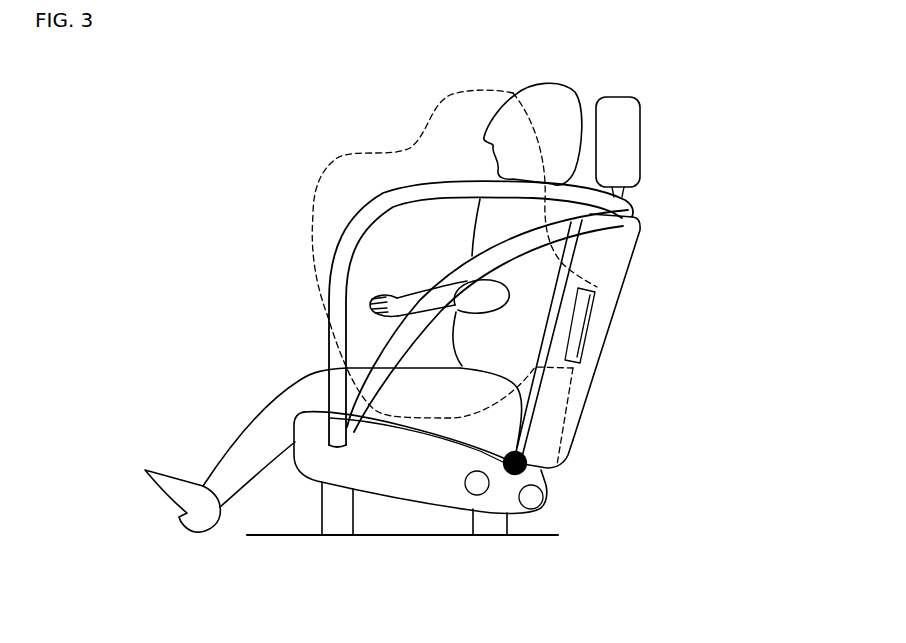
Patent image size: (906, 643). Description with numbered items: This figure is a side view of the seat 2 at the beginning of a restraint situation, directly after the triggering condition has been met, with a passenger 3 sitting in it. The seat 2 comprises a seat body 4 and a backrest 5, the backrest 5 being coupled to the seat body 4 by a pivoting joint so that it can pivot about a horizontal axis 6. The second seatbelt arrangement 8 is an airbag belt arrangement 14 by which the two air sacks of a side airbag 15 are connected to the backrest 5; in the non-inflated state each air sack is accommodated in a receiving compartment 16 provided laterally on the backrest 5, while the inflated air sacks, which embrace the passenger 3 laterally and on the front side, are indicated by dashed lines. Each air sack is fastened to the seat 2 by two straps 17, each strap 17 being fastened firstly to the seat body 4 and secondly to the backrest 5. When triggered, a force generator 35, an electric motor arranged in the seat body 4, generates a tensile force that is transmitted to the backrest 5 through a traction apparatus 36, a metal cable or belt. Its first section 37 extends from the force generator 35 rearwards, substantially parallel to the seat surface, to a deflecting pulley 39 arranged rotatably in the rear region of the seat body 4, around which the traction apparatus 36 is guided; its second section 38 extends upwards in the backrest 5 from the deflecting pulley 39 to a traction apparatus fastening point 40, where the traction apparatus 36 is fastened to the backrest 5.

The seat 2 is at (708, 168).
The passenger 3 is at (558, 84).
The seat body 4 is at (407, 503).
The backrest 5 is at (637, 250).
The horizontal axis 6 is at (530, 472).
The second seatbelt arrangement 8 is at (682, 147).
The airbag belt arrangement 14 is at (660, 154).
The side airbag 15 is at (459, 66).
The receiving compartment 16 is at (580, 328).
The straps 17 is at (453, 270).
The force generator 35 is at (470, 495).
The traction apparatus 36 is at (590, 460).
The first section 37 is at (508, 515).
The second section 38 is at (583, 408).
The deflecting pulley 39 is at (538, 507).
The traction apparatus fastening point 40 is at (597, 378).